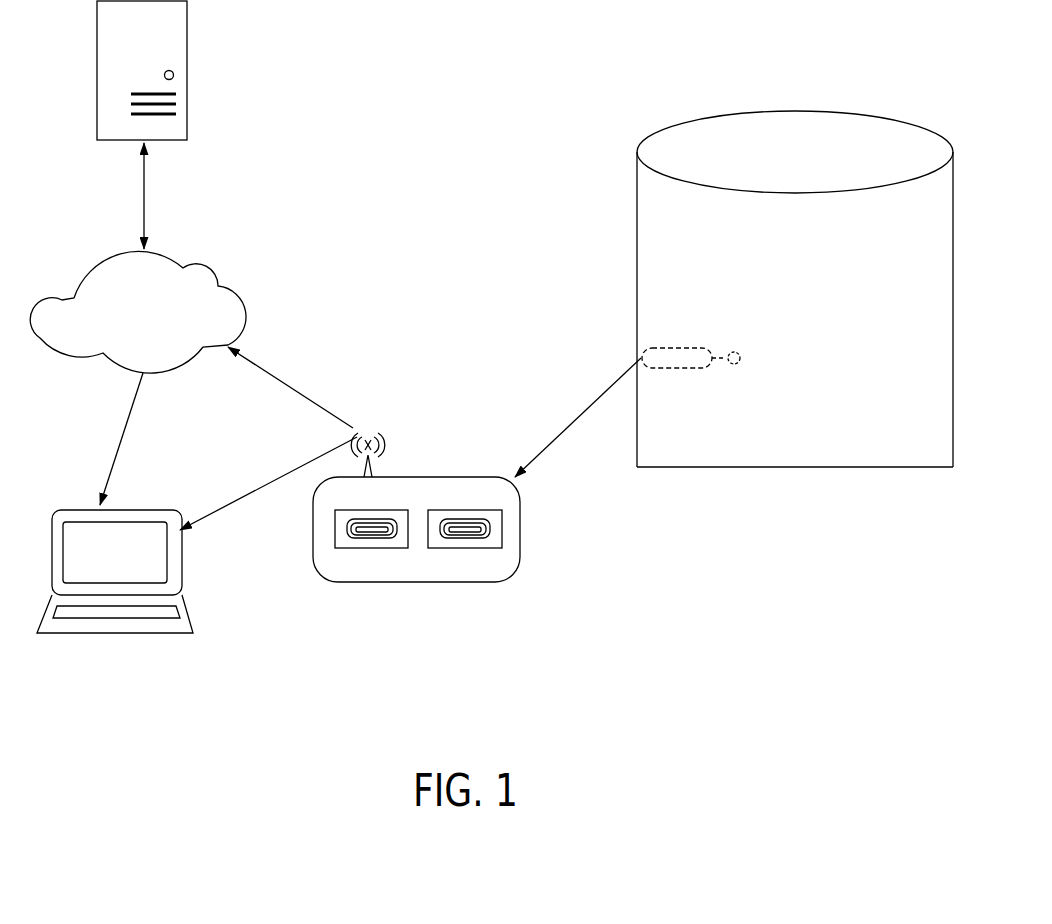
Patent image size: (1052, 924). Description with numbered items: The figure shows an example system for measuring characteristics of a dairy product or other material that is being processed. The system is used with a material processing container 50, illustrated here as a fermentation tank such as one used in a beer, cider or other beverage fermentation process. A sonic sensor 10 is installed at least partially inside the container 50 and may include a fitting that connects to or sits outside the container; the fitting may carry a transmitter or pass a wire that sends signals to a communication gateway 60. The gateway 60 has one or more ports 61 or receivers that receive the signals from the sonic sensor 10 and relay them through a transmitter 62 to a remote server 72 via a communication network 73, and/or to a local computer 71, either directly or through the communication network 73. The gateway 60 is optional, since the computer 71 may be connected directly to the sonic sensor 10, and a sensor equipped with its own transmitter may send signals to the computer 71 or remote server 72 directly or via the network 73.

The sonic sensor 10 is at (690, 348).
The material processing container 50 is at (712, 132).
The communication gateway 60 is at (336, 583).
The ports 61 is at (445, 549).
The transmitter 62 is at (377, 468).
The local computer 71 is at (76, 510).
The remote server 72 is at (112, 70).
The communication network 73 is at (60, 298).